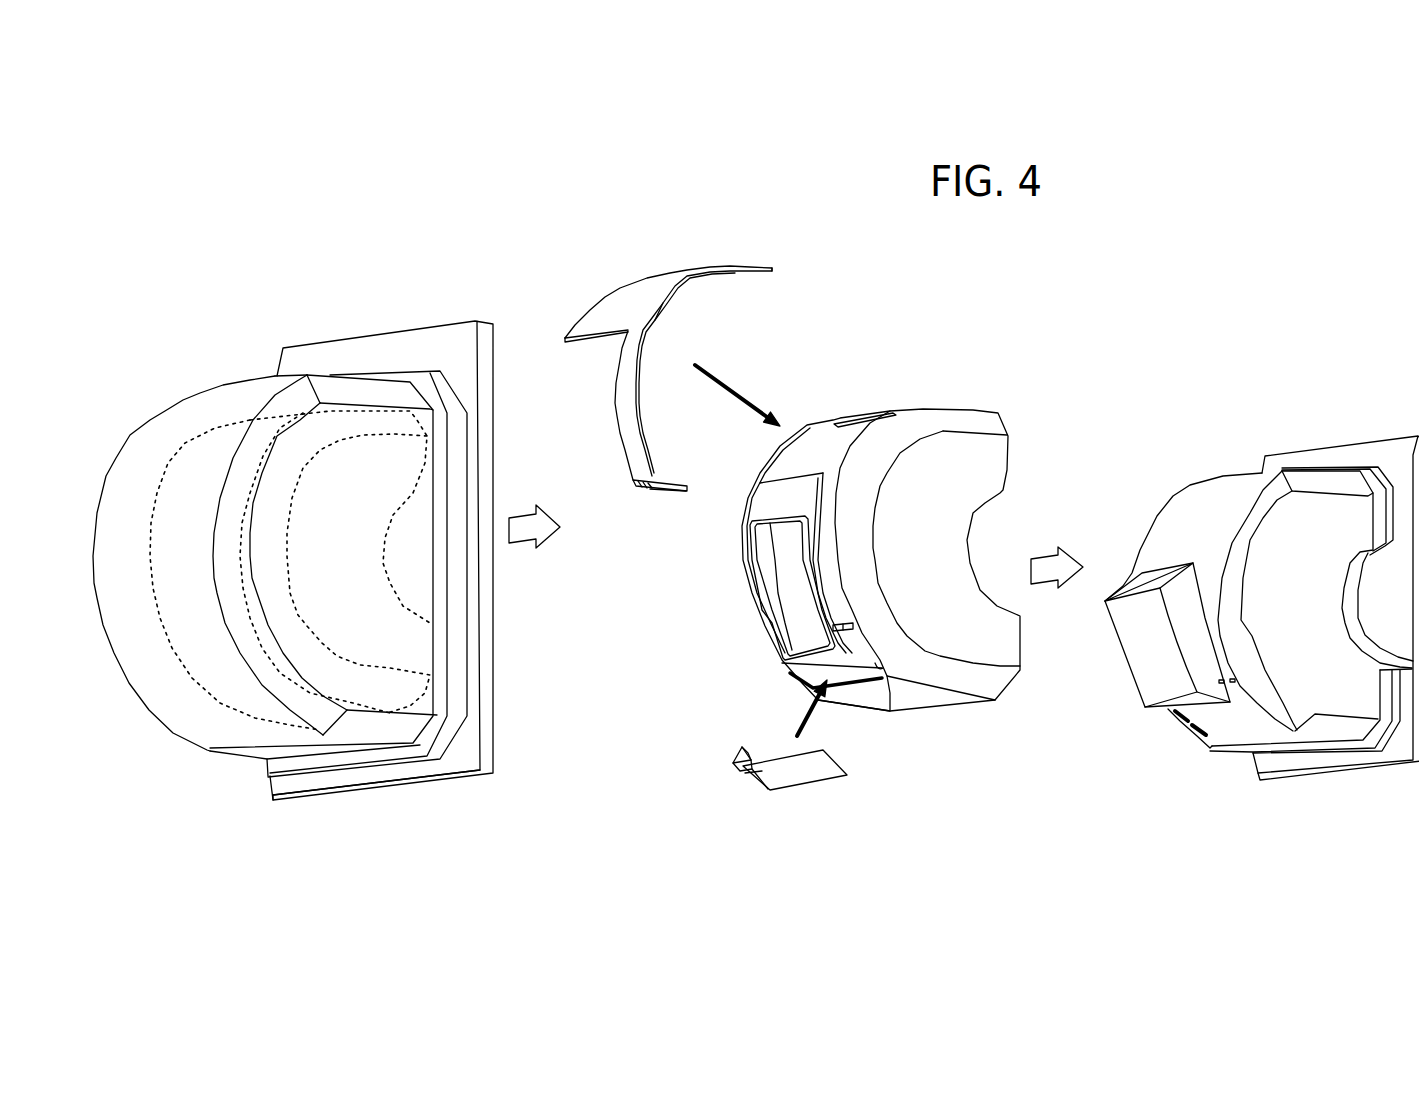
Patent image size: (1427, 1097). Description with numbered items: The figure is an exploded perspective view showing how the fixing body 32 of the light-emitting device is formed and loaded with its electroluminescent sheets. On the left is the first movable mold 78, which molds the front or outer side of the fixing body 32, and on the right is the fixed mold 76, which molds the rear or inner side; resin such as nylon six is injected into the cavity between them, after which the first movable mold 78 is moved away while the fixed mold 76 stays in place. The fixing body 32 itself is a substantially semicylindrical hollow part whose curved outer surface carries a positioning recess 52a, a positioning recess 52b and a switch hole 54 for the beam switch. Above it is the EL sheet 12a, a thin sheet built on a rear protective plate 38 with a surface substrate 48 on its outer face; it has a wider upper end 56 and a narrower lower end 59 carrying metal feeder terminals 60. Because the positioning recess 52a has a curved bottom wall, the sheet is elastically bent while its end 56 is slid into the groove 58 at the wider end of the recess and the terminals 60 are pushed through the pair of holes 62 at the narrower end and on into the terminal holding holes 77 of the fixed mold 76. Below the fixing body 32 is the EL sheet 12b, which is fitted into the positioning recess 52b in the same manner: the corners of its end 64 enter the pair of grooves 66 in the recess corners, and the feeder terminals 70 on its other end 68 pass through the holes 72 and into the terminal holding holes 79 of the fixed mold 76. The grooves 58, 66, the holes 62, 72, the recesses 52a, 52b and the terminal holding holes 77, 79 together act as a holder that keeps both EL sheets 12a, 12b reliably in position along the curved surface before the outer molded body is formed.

The first movable mold 78 is at (230, 360).
The EL sheet 12a is at (665, 379).
The surface substrate 48 is at (592, 307).
The wider upper end 56 is at (773, 264).
The rear protective plate 38 is at (663, 307).
The narrower lower end 59 is at (633, 480).
The feeder terminals 60 is at (652, 492).
The fixing body 32 is at (856, 553).
The groove 58 is at (860, 415).
The positioning recess 52a is at (777, 453).
The switch hole 54 is at (798, 588).
The holes 62 is at (837, 620).
The grooves 66 is at (883, 665).
The holes 72 is at (803, 688).
The positioning recess 52b is at (863, 673).
The other end 68 is at (765, 767).
The feeder terminals 70 is at (738, 767).
The end 64 is at (842, 762).
The EL sheet 12b is at (786, 789).
The fixed mold 76 is at (1262, 572).
The terminal holding holes 77 is at (1234, 676).
The terminal holding holes 79 is at (1200, 733).